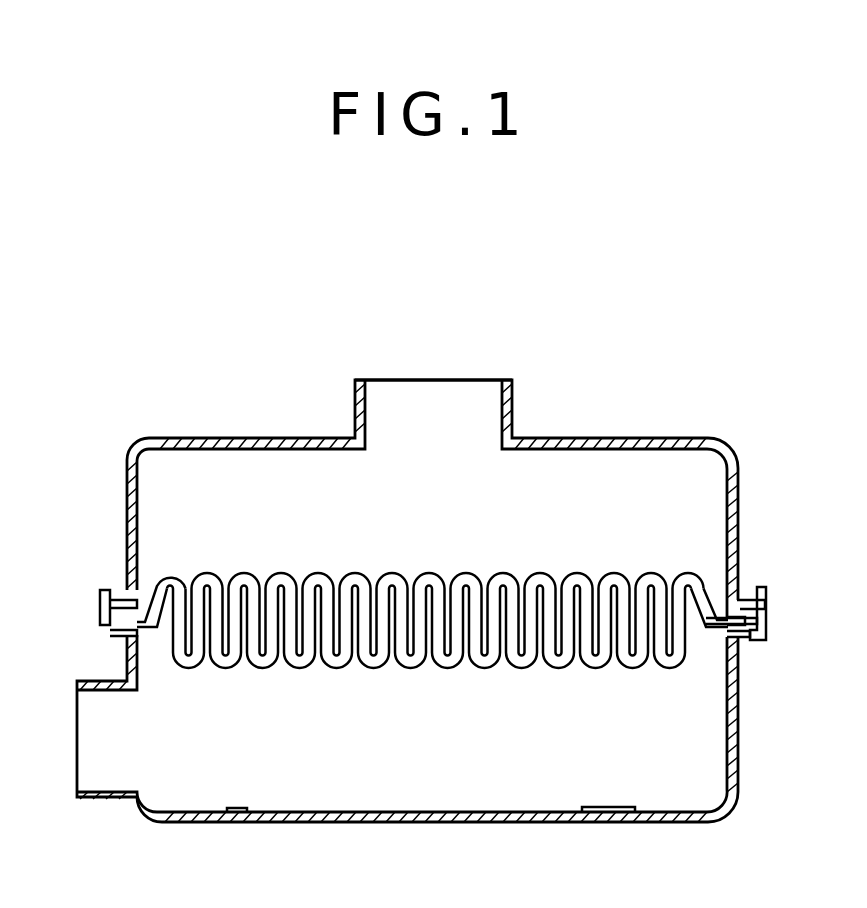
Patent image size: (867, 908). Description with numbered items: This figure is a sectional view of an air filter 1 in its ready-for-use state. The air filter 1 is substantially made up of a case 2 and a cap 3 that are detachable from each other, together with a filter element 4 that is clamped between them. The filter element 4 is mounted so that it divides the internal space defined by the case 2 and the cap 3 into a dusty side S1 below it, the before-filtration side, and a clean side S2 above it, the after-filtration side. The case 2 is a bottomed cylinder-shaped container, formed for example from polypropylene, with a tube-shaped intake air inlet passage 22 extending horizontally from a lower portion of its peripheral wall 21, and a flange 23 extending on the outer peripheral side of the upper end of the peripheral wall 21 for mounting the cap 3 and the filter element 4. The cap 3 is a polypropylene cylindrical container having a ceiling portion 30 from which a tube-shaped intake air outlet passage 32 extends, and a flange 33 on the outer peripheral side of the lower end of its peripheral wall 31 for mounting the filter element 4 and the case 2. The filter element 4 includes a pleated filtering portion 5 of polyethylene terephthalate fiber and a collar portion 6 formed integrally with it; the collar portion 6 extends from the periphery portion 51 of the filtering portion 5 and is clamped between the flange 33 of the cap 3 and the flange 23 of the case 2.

The air filter 1 is at (290, 414).
The case 2 is at (548, 834).
The cap 3 is at (600, 437).
The filter element 4 is at (487, 673).
The pleated filtering portion 5 is at (515, 662).
The collar portion 6 is at (754, 640).
The peripheral wall 21 is at (738, 712).
The intake air inlet passage 22 is at (102, 735).
The flange 23 is at (745, 645).
The ceiling portion 30 is at (512, 436).
The peripheral wall 31 is at (737, 531).
The intake air outlet passage 32 is at (435, 412).
The flange 33 is at (741, 599).
The periphery portion 51 is at (714, 625).
The dusty side S1 is at (452, 732).
The clean side S2 is at (452, 499).